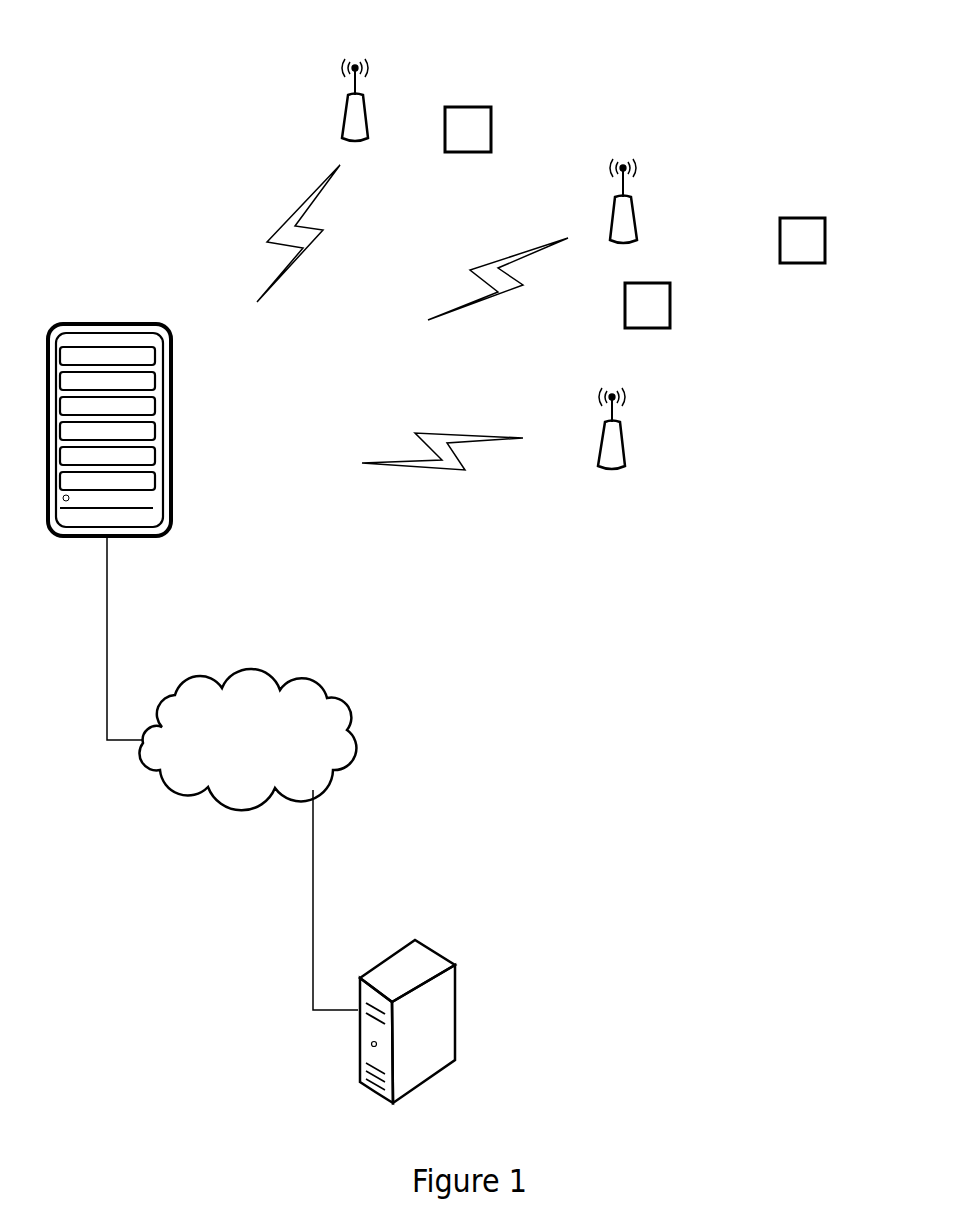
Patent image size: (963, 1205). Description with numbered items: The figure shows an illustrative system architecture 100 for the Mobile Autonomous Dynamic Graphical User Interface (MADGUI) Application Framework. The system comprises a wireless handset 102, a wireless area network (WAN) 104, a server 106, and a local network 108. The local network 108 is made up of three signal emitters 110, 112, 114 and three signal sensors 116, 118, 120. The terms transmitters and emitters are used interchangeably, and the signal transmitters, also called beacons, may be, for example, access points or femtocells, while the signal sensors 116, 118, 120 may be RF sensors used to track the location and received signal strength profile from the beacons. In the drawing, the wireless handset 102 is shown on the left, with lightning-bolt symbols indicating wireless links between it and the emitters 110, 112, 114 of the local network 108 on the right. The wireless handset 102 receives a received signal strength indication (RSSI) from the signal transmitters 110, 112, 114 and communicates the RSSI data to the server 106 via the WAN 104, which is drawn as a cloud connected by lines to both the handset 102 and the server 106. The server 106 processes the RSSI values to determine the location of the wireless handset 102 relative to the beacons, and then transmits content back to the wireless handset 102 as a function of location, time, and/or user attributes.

The system architecture 100 is at (100, 55).
The wireless handset 102 is at (138, 320).
The wireless area network (WAN) 104 is at (255, 672).
The server 106 is at (380, 957).
The local network 108 is at (690, 88).
The signal emitter 110 is at (373, 108).
The signal emitter 112 is at (635, 217).
The signal emitter 114 is at (617, 432).
The signal sensor 116 is at (492, 127).
The signal sensor 118 is at (825, 248).
The signal sensor 120 is at (670, 303).